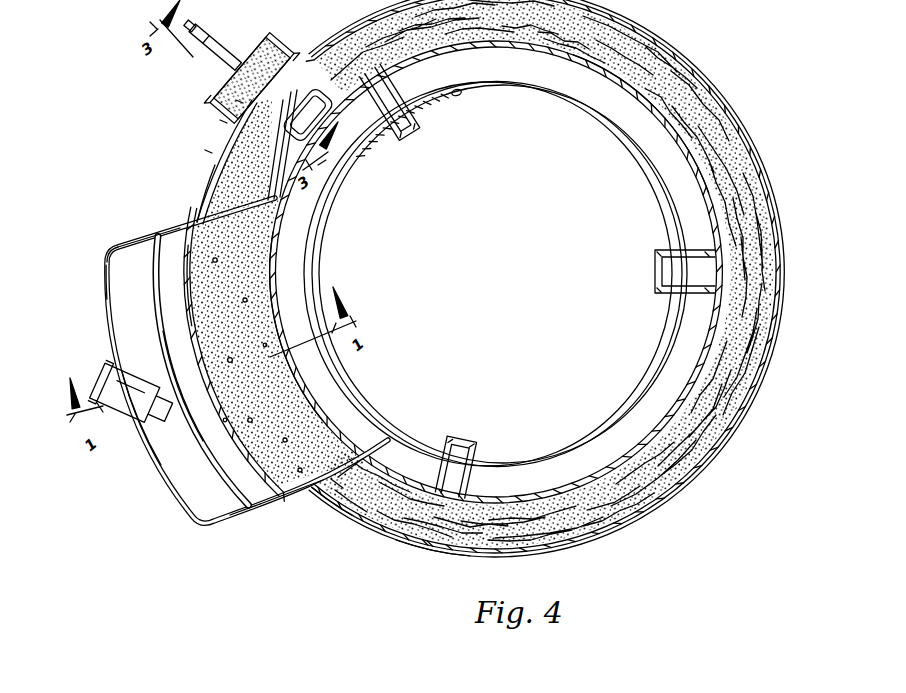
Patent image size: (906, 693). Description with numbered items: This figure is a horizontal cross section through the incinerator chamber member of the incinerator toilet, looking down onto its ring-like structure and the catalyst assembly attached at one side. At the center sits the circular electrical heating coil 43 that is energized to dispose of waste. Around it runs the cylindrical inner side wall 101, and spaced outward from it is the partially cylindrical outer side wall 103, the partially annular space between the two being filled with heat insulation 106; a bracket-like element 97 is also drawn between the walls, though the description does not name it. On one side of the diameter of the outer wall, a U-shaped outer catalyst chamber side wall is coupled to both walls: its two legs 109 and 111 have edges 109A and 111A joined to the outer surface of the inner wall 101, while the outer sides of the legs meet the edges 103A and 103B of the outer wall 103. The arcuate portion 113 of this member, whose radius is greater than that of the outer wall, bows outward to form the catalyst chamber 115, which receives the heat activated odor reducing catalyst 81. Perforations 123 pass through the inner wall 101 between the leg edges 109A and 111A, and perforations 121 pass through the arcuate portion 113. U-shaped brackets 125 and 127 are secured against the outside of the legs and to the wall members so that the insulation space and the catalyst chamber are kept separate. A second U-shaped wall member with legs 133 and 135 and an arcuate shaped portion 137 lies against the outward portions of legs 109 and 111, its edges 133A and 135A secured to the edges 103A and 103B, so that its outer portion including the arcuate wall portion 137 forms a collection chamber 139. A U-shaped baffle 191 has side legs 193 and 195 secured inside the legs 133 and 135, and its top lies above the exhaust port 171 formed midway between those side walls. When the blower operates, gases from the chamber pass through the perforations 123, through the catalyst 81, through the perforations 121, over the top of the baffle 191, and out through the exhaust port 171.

The outer side wall 103 is at (714, 97).
The heat insulation 106 is at (664, 505).
The edge of outer wall member 103A is at (268, 207).
The inner side wall 101 is at (649, 126).
The electrical heating coil 43 is at (663, 200).
The edge of leg 109A is at (348, 182).
The edge of leg 111A is at (386, 440).
The bracket 97 is at (655, 266).
The perforations 123 is at (270, 274).
The leg of second U-shaped wall member 135 is at (207, 521).
The arcuate shaped portion 137 is at (178, 460).
The side leg of baffle 195 is at (247, 518).
The collection chamber 139 is at (142, 347).
The arcuate portion 113 is at (232, 445).
The perforations 121 is at (317, 260).
The heat activated odor reducing catalyst 81 is at (270, 452).
The leg of U-shaped member 111 is at (320, 507).
The edge of leg 135A is at (313, 476).
The edge of outer wall member 103B is at (327, 494).
The U-shaped bracket 127 is at (412, 545).
The leg of second U-shaped wall member 133 is at (135, 247).
The side leg of baffle 193 is at (118, 250).
The U-shaped baffle 191 is at (117, 277).
The U-shaped bracket 125 is at (247, 158).
The edge of leg 133A is at (200, 183).
The catalyst chamber 115 is at (210, 215).
The leg of U-shaped member 109 is at (232, 212).
The exhaust port 171 is at (143, 428).